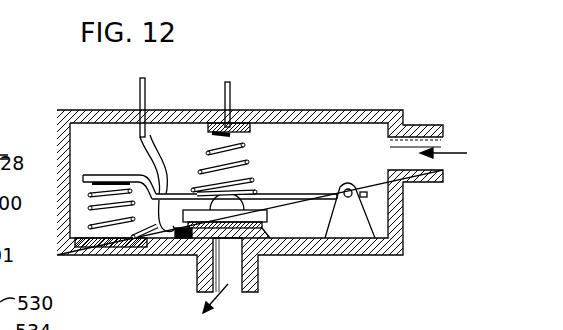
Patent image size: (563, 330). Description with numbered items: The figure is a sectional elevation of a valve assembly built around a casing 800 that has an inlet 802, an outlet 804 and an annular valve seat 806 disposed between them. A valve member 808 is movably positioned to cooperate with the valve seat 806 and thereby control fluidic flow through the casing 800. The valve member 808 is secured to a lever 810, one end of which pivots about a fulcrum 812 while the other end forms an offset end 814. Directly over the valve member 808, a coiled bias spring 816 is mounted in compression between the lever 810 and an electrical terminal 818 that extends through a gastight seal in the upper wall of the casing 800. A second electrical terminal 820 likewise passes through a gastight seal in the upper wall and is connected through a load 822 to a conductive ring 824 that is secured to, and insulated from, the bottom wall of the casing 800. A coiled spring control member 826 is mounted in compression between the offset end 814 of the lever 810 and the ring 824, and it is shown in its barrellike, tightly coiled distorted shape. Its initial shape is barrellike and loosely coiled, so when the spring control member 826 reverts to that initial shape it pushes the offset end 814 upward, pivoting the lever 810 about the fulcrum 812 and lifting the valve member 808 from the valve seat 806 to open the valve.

The casing 800 is at (375, 110).
The inlet 802 is at (438, 160).
The outlet 804 is at (238, 288).
The annular valve seat 806 is at (187, 235).
The valve member 808 is at (282, 252).
The lever 810 is at (279, 193).
The fulcrum 812 is at (357, 212).
The offset end 814 is at (90, 173).
The coiled bias spring 816 is at (250, 163).
The electrical terminal 818 is at (231, 93).
The electrical terminal 820 is at (145, 85).
The load 822 is at (150, 135).
The conductive ring 824 is at (76, 247).
The coiled spring control member 826 is at (105, 203).